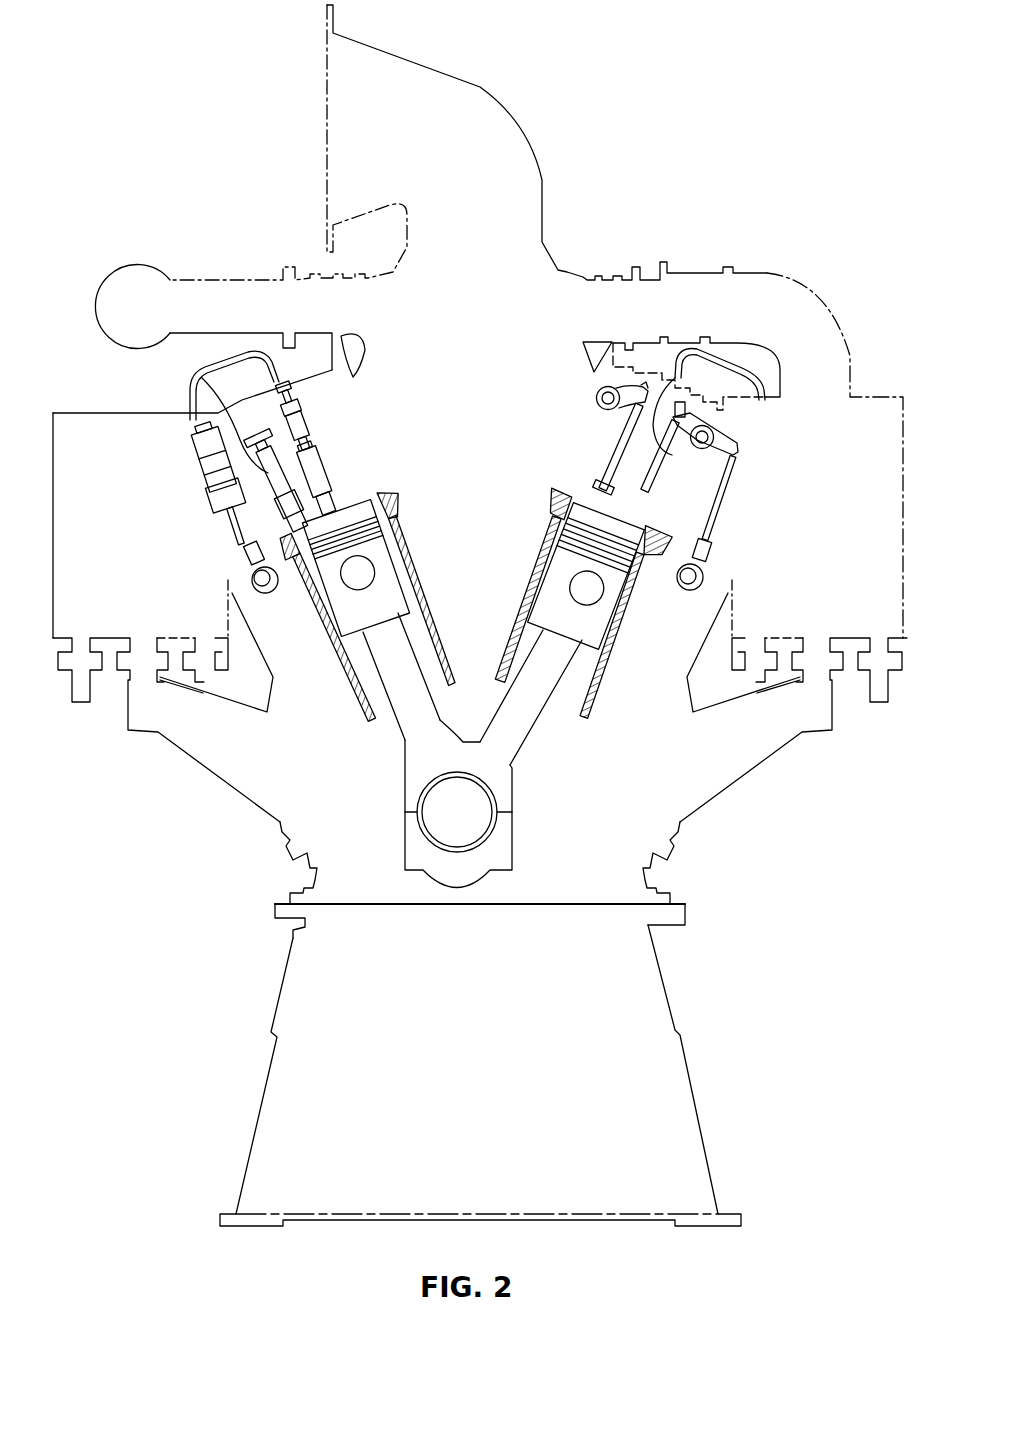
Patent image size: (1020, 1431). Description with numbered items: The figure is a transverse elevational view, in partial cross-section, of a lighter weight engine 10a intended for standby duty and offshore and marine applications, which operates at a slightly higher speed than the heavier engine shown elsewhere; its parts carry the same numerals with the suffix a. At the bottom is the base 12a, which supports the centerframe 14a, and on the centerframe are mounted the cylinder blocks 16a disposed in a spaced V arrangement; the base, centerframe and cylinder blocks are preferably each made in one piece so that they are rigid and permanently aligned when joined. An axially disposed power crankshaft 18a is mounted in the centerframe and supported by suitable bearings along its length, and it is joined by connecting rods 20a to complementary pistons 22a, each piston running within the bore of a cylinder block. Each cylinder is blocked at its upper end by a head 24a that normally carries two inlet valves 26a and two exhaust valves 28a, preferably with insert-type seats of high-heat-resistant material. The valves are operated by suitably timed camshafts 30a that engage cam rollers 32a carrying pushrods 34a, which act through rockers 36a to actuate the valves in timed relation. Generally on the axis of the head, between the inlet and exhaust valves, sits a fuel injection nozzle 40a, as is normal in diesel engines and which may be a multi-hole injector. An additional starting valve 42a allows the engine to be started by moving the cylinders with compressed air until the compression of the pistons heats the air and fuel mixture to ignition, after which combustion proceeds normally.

The engine 10a is at (200, 985).
The base 12a is at (682, 1055).
The centerframe 14a is at (678, 820).
The cylinder block 16a is at (350, 692).
The power crankshaft 18a is at (432, 798).
The connecting rod 20a is at (543, 650).
The piston 22a is at (560, 578).
The head 24a is at (352, 520).
The inlet valve 26a is at (620, 473).
The exhaust valve 28a is at (677, 412).
The camshaft 30a is at (252, 576).
The cam roller 32a is at (248, 552).
The pushrod 34a is at (722, 489).
The rocker 36a is at (640, 390).
The fuel injection nozzle 40a is at (326, 528).
The starting valve 42a is at (189, 375).